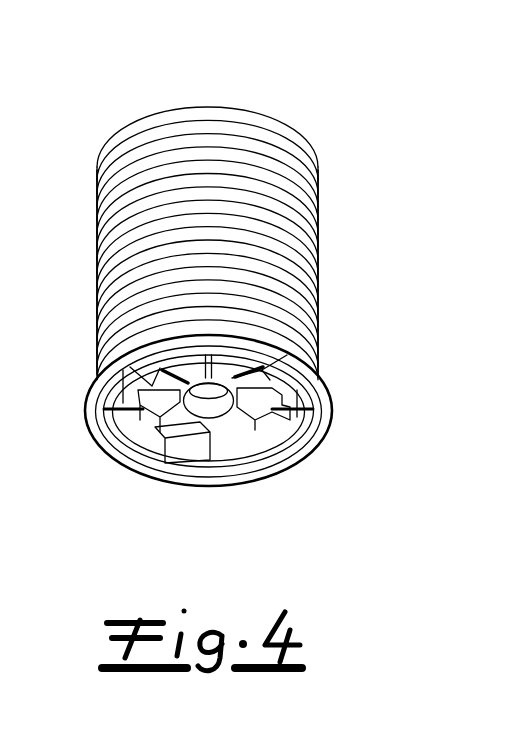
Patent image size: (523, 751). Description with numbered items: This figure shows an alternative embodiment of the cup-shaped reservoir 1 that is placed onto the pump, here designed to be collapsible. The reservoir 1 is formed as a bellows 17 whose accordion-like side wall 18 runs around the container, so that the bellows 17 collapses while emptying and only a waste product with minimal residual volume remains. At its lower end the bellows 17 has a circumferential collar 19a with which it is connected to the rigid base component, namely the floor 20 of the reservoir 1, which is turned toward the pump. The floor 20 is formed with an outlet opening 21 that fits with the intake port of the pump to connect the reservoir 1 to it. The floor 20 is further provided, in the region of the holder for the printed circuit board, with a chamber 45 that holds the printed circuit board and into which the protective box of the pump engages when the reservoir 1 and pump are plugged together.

The reservoir 1 is at (336, 116).
The bellows 17 is at (319, 239).
The accordion-like side wall 18 is at (298, 193).
The circumferential collar 19a is at (280, 333).
The floor 20 is at (96, 424).
The outlet opening 21 is at (190, 409).
The chamber 45 is at (177, 461).